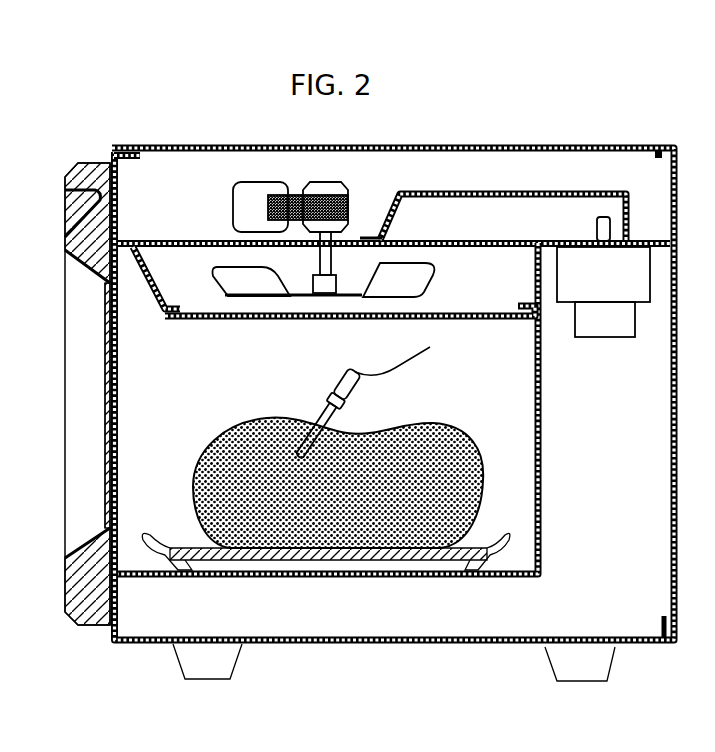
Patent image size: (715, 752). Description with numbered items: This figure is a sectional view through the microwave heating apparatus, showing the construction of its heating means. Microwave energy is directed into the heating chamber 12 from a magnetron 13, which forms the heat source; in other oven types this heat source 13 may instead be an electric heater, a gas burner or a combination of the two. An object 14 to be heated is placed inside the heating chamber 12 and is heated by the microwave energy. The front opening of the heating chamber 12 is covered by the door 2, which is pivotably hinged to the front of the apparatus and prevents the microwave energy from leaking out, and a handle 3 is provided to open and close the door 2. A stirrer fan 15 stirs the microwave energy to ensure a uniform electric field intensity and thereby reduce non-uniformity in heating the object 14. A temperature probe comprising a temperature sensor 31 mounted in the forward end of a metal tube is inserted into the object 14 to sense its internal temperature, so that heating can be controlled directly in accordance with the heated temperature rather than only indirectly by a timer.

The door 2 is at (78, 417).
The handle 3 is at (80, 206).
The heating chamber 12 is at (122, 405).
The magnetron 13 is at (648, 262).
The object to be heated 14 is at (470, 442).
The stirrer fan 15 is at (222, 278).
The temperature sensor 31 is at (322, 407).